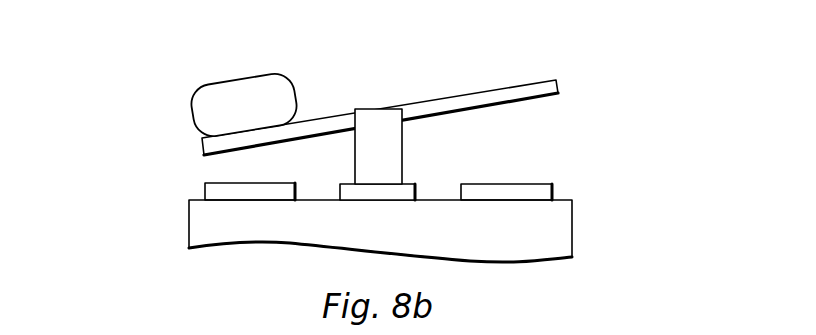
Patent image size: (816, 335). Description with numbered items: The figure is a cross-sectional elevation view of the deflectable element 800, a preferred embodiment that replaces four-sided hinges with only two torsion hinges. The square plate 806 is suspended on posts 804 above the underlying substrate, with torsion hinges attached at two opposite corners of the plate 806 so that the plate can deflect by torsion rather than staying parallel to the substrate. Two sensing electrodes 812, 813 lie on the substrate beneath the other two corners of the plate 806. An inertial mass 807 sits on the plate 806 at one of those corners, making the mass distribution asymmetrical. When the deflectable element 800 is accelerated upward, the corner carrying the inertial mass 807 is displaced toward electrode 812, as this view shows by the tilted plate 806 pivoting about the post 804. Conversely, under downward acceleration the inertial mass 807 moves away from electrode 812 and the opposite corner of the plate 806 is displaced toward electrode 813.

The deflectable element 800 is at (379, 131).
The post 804 is at (380, 109).
The square plate 806 is at (203, 145).
The inertial mass 807 is at (232, 97).
The sensing electrode 812 is at (210, 191).
The sensing electrode 813 is at (515, 184).